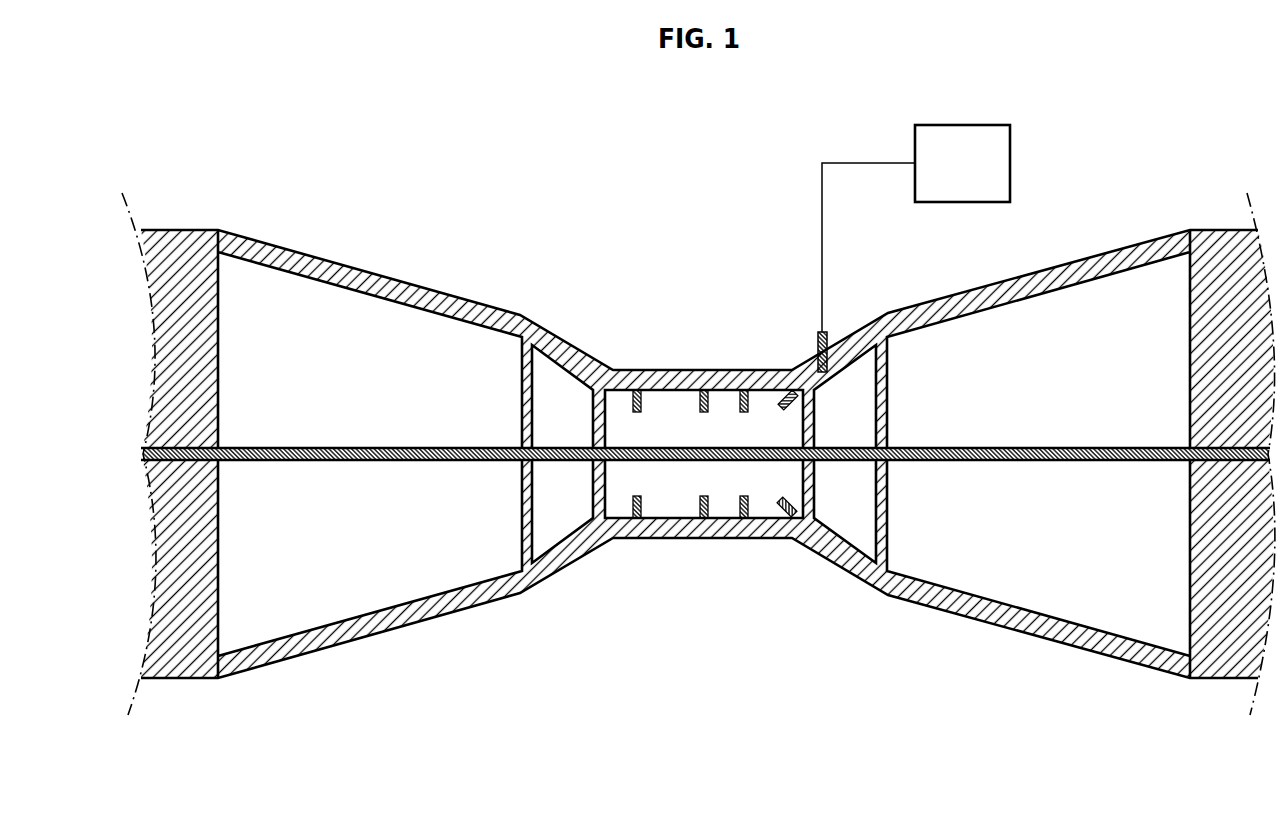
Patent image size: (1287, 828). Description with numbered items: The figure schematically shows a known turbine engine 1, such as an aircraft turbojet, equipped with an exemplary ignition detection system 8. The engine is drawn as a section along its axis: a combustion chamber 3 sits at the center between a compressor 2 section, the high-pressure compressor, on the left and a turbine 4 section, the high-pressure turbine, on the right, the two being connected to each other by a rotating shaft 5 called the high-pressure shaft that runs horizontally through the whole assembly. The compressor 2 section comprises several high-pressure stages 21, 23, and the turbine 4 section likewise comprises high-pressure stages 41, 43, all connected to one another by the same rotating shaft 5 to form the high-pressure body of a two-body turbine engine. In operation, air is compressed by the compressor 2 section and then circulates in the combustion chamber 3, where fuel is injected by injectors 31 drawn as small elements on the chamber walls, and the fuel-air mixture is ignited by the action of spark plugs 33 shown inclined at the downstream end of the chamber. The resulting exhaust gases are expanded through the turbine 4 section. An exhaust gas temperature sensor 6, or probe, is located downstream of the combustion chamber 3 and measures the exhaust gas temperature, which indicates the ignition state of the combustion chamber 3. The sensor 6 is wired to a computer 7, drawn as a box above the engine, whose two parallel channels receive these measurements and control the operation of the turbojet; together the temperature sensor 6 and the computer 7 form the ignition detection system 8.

The turbine engine 1 is at (522, 128).
The compressor section 2 is at (453, 665).
The high-pressure stage 21 is at (394, 506).
The high-pressure stage 23 is at (572, 506).
The combustion chamber 3 is at (710, 350).
The injectors 31 is at (700, 401).
The spark plugs 33 is at (783, 409).
The turbine section 4 is at (953, 665).
The high-pressure stage 41 is at (855, 506).
The high-pressure stage 43 is at (1035, 506).
The rotating shaft 5 is at (1098, 448).
The exhaust gas temperature sensor 6 is at (818, 347).
The computer 7 is at (970, 176).
The turbine engine ignition detection system 8 is at (884, 115).